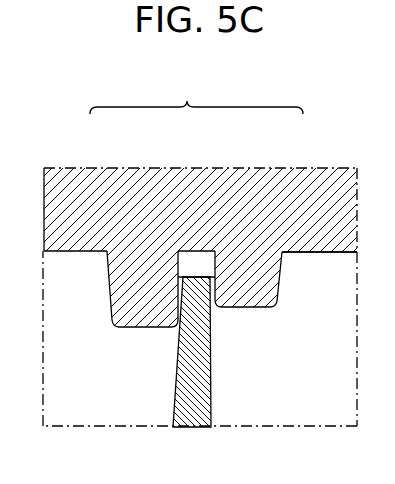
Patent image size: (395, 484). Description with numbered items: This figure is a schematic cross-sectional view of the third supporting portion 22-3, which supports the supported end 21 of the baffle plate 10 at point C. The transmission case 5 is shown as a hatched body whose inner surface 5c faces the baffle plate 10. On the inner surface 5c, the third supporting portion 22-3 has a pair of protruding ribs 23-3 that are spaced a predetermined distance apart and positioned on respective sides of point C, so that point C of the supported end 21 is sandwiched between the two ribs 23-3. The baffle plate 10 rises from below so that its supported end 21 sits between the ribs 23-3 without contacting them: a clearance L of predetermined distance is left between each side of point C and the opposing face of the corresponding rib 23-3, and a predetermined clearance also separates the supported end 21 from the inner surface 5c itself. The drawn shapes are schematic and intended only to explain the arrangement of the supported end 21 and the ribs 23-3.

The transmission case 5 is at (80, 253).
The inner surface 5c is at (313, 263).
The third supporting portion 22-3 is at (196, 96).
The protruding rib 23-3 is at (112, 283).
The supported end 21 is at (200, 277).
The baffle plate 10 is at (213, 407).
The clearance L is at (174, 332).